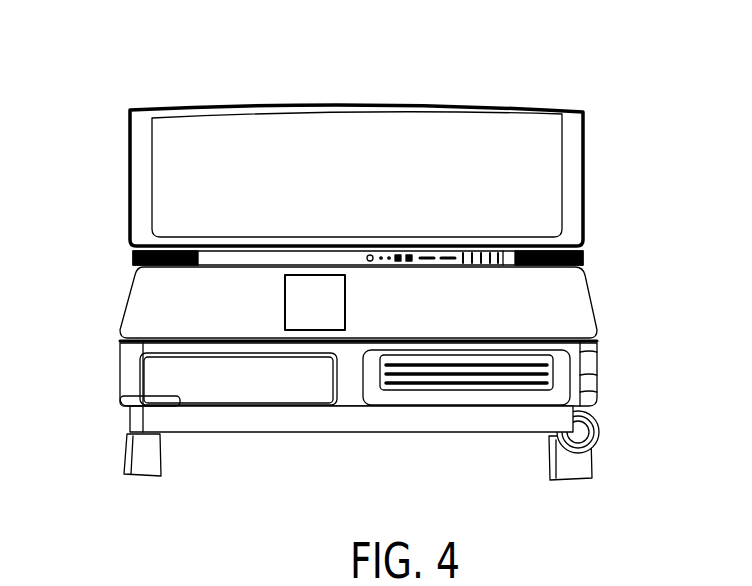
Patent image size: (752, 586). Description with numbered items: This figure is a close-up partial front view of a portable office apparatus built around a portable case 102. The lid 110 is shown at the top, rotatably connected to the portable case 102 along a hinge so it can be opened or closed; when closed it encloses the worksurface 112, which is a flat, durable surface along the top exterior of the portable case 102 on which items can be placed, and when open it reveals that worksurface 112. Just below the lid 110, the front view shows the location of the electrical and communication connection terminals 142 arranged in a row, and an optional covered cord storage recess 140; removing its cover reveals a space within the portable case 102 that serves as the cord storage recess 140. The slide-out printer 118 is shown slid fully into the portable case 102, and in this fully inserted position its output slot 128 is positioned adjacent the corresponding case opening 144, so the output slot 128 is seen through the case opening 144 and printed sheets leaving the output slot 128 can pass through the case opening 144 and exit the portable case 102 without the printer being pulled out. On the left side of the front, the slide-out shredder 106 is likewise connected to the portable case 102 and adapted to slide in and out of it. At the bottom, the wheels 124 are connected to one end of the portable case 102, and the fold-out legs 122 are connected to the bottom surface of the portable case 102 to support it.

The lid 110 is at (371, 256).
The portable case 102 is at (350, 383).
The slide-out shredder 106 is at (208, 386).
The worksurface 112 is at (545, 303).
The slide-out printer 118 is at (608, 335).
The fold-out legs 122 is at (600, 463).
The wheels 124 is at (610, 424).
The output slot 128 is at (465, 378).
The cord storage recess 140 is at (322, 300).
The electrical and communication connection terminals 142 is at (441, 248).
The case opening 144 is at (518, 421).